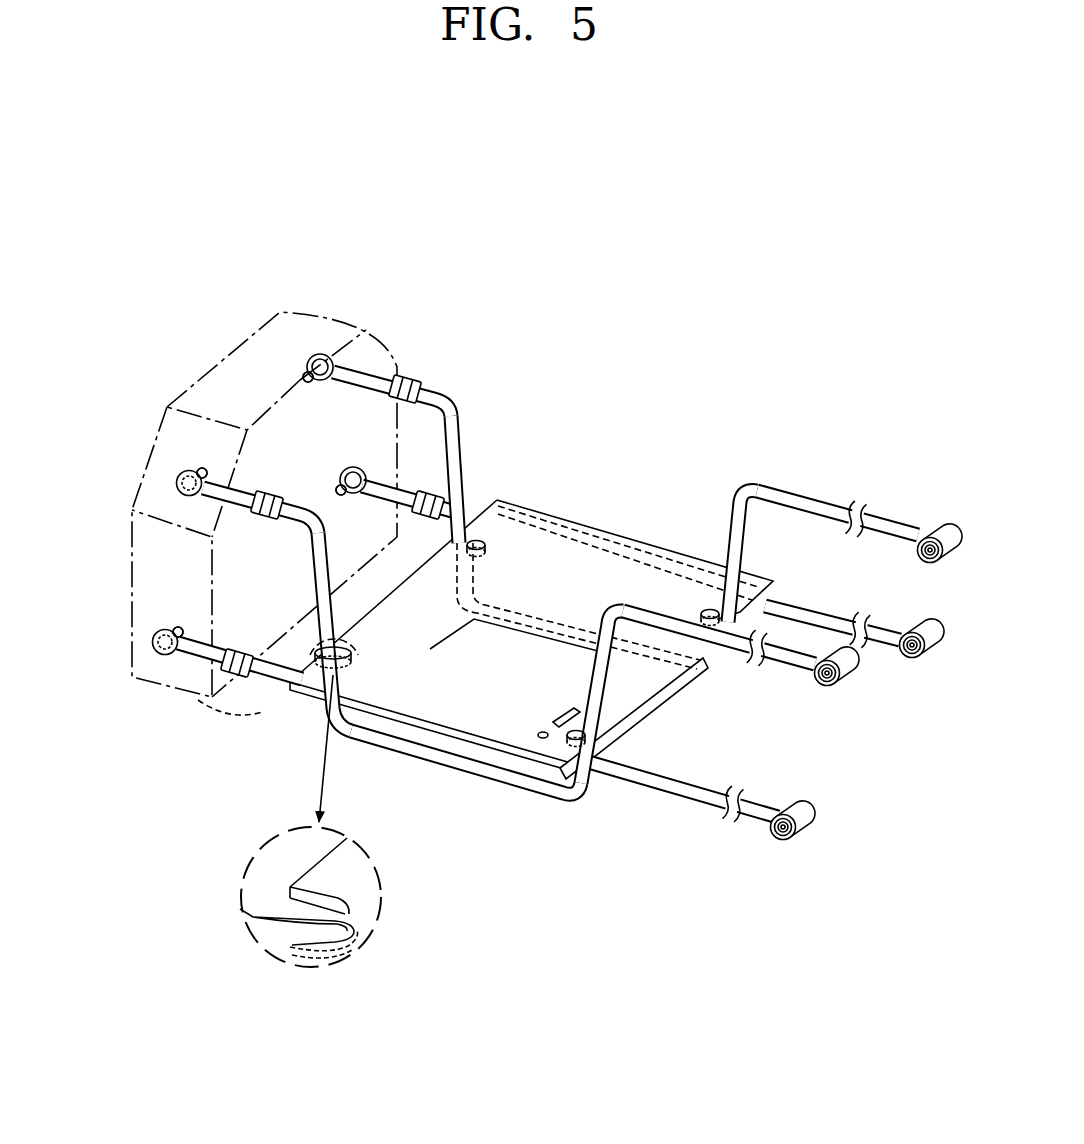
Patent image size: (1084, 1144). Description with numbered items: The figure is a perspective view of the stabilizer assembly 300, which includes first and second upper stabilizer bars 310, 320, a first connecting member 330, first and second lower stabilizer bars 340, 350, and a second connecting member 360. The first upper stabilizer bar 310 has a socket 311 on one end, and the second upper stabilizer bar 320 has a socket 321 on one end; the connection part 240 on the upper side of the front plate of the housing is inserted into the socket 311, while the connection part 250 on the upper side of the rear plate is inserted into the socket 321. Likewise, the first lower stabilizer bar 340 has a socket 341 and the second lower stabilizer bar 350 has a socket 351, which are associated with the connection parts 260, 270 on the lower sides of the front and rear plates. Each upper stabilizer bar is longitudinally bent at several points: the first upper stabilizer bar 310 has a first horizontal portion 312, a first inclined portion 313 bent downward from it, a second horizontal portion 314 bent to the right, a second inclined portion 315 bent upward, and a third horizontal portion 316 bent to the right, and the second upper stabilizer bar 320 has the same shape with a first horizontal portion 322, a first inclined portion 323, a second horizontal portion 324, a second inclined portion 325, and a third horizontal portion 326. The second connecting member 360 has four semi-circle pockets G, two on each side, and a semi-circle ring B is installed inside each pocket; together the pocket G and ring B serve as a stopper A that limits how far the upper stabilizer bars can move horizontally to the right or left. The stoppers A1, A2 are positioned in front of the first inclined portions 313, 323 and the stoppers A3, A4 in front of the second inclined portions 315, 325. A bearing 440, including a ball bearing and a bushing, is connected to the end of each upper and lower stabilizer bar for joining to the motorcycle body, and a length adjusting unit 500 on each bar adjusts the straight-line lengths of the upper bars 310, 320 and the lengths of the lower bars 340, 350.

The connection part 240 is at (175, 480).
The connection part 250 is at (332, 354).
The connection part 260 is at (168, 658).
The connection part 270 is at (371, 467).
The stabilizer assembly 300 is at (671, 309).
The first upper stabilizer bar 310 is at (481, 576).
The socket 311 is at (192, 470).
The first horizontal portion 312 is at (236, 497).
The first inclined portion 313 is at (308, 572).
The second horizontal portion 314 is at (445, 752).
The second inclined portion 315 is at (606, 692).
The third horizontal portion 316 is at (730, 646).
The second upper stabilizer bar 320 is at (590, 445).
The socket 321 is at (307, 362).
The first horizontal portion 322 is at (436, 384).
The first inclined portion 323 is at (461, 440).
The second horizontal portion 324 is at (537, 626).
The second inclined portion 325 is at (735, 530).
The third horizontal portion 326 is at (803, 503).
The first connecting member 330 is at (629, 748).
The first lower stabilizer bar 340 is at (688, 813).
The socket 341 is at (160, 624).
The second lower stabilizer bar 350 is at (797, 592).
The socket 351 is at (349, 468).
The second connecting member 360 is at (613, 523).
The bearing 440 is at (935, 534).
The length adjusting unit 500 is at (399, 376).
The stopper A is at (270, 821).
The stopper A1 is at (350, 675).
The stopper A2 is at (483, 520).
The stopper A3 is at (566, 748).
The stopper A4 is at (711, 600).
The semi-circle pocket G is at (288, 888).
The semi-circle ring B is at (274, 929).